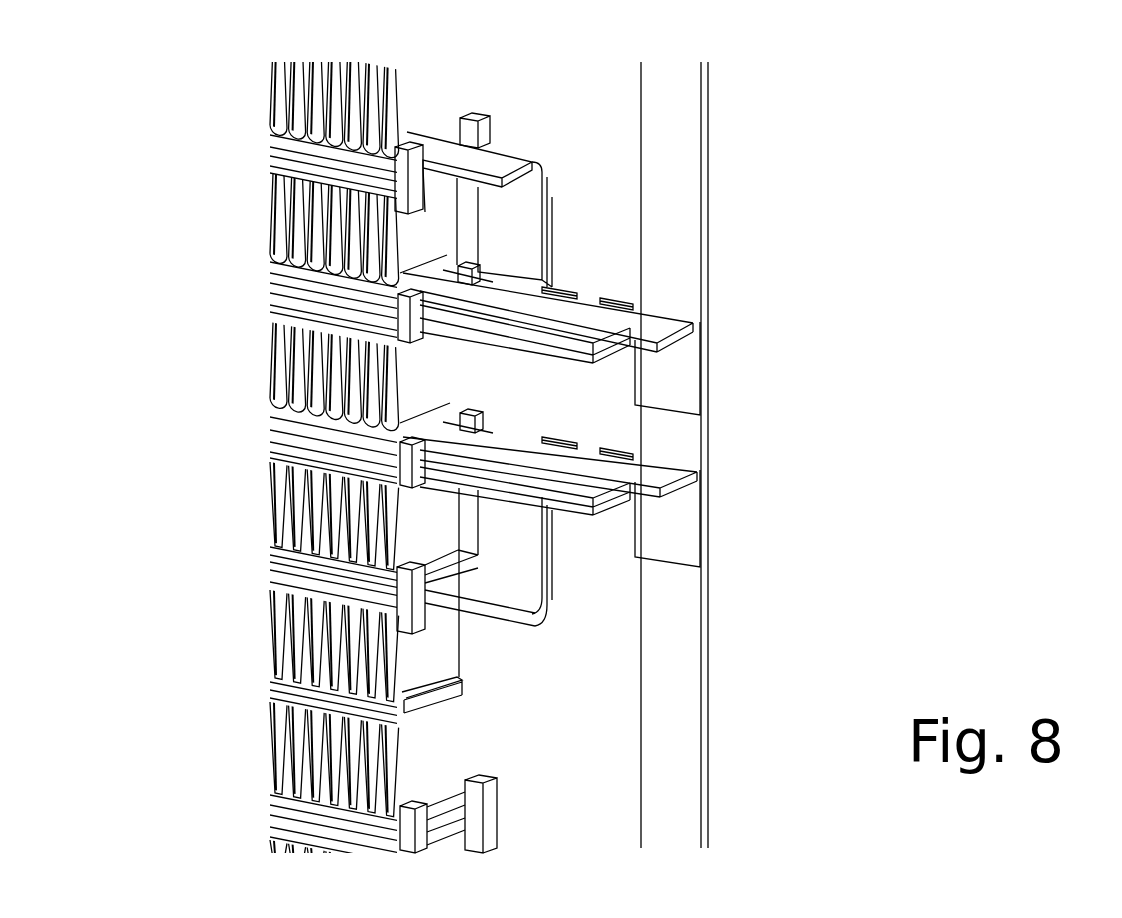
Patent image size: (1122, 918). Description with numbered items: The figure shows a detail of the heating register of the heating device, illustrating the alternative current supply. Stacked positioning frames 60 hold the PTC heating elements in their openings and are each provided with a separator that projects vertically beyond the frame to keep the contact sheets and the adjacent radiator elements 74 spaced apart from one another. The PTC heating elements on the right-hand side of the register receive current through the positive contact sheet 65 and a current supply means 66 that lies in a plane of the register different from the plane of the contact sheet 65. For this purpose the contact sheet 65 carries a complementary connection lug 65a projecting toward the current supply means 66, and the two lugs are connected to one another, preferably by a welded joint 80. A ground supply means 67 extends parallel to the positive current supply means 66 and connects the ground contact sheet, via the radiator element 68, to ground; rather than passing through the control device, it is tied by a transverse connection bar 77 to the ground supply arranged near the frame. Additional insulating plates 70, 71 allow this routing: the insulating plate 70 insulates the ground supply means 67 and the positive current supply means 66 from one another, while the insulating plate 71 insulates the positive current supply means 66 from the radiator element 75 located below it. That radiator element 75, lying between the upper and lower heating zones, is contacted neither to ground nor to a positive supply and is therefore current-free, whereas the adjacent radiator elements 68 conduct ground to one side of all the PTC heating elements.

The positioning frame 60 is at (428, 143).
The contact sheet 65 is at (492, 165).
The connection lug 65a is at (520, 197).
The current supply means 66 is at (467, 328).
The ground supply means 67 is at (560, 305).
The radiator element 68 is at (307, 205).
The insulating plate 70 is at (545, 332).
The insulating plate 71 is at (515, 340).
The radiator element 74 is at (310, 92).
The radiator element 75 is at (305, 367).
The transverse connection bar 77 is at (682, 103).
The welded joint 80 is at (548, 233).